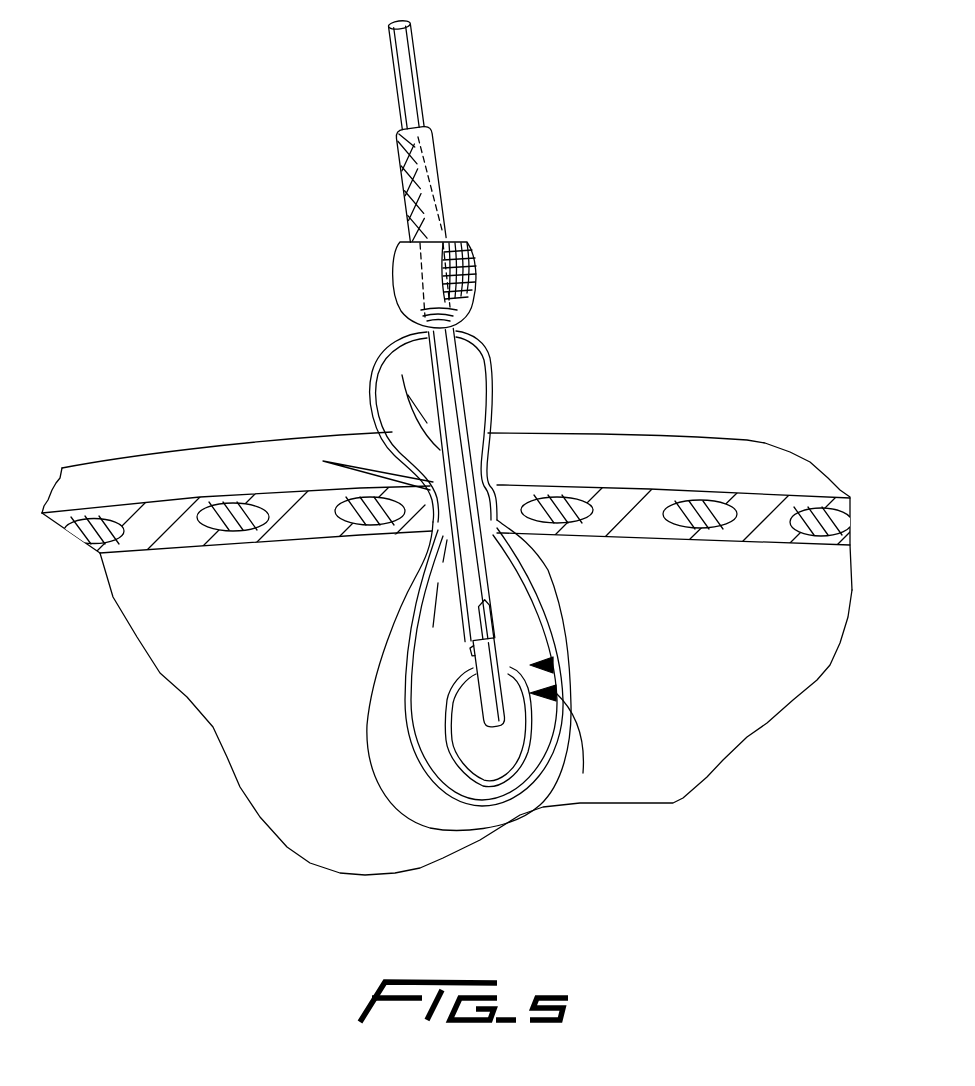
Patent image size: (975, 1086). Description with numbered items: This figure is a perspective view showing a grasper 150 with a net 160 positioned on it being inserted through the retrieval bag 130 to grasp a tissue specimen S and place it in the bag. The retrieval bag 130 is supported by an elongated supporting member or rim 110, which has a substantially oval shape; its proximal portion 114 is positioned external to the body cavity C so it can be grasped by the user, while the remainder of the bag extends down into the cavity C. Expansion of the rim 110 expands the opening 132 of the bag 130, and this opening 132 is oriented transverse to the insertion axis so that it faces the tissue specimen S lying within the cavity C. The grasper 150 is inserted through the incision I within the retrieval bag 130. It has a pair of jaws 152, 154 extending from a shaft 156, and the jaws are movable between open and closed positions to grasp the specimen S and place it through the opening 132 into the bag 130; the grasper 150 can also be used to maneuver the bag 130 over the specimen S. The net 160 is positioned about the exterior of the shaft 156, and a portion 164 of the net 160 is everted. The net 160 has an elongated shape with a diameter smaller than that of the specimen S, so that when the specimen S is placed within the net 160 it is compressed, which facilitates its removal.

The rim 110 is at (523, 563).
The proximal portion 114 is at (390, 343).
The retrieval bag 130 is at (425, 693).
The opening 132 is at (553, 662).
The grasper 150 is at (450, 355).
The jaw 152 is at (497, 648).
The jaw 154 is at (472, 660).
The shaft 156 is at (460, 400).
The net 160 is at (433, 183).
The everted portion 164 is at (467, 260).
The body cavity C is at (287, 611).
The incision I is at (493, 482).
The tissue specimen S is at (487, 760).